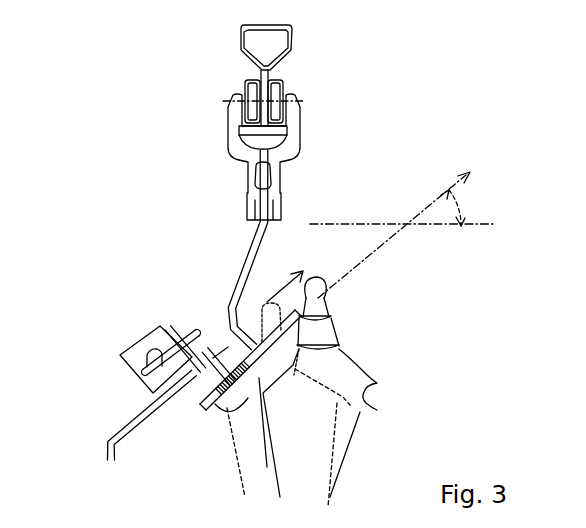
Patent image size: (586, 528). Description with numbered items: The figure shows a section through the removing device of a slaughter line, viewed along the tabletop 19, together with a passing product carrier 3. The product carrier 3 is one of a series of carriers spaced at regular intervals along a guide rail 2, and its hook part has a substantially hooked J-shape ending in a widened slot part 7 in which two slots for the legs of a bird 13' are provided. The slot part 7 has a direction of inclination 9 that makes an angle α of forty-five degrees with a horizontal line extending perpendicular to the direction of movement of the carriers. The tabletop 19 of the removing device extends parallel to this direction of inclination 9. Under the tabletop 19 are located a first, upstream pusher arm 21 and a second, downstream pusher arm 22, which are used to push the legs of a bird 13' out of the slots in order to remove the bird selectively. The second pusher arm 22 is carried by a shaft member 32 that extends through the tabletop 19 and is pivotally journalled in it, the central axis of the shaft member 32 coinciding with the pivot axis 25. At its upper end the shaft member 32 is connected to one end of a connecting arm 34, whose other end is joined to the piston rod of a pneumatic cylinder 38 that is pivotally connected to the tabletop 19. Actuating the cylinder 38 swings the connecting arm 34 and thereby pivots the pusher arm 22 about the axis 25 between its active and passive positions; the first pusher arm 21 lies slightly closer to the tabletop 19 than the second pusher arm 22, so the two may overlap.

The guide rail 2 is at (293, 44).
The product carrier 3 is at (393, 135).
The slot part 7 is at (330, 310).
The direction of inclination 9 is at (431, 200).
The bird 13' is at (321, 428).
The tabletop 19 is at (130, 426).
The first, upstream pusher arm 21 is at (225, 408).
The second, downstream pusher arm 22 is at (335, 341).
The pivot axis 25 is at (182, 334).
The shaft member 32 is at (228, 338).
The connecting arm 34 is at (140, 344).
The pneumatic cylinder 38 is at (176, 331).